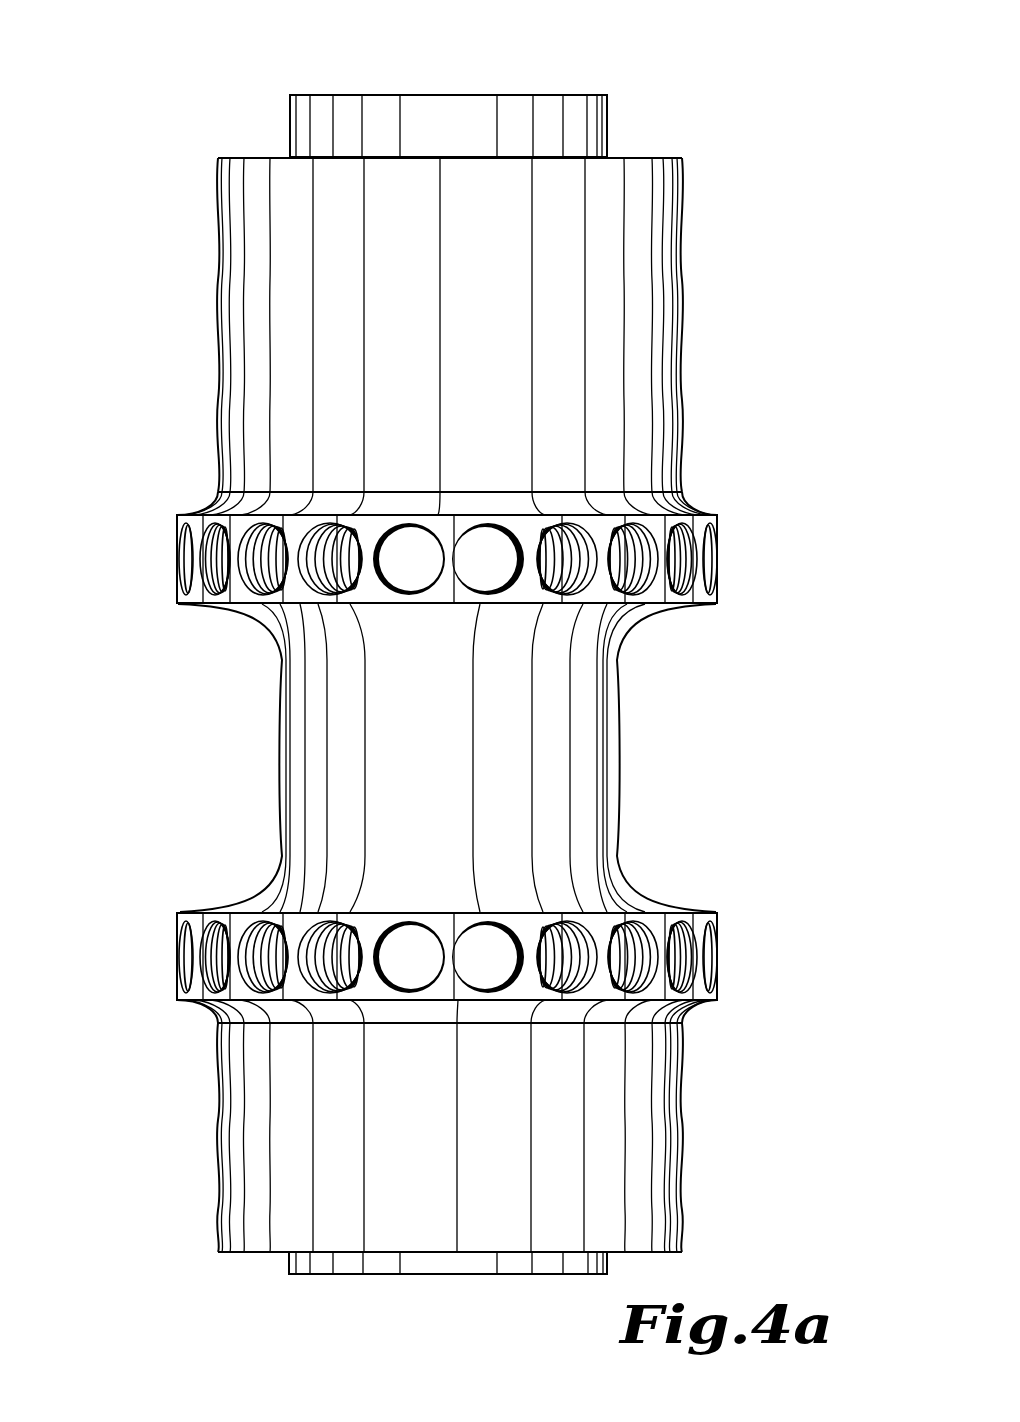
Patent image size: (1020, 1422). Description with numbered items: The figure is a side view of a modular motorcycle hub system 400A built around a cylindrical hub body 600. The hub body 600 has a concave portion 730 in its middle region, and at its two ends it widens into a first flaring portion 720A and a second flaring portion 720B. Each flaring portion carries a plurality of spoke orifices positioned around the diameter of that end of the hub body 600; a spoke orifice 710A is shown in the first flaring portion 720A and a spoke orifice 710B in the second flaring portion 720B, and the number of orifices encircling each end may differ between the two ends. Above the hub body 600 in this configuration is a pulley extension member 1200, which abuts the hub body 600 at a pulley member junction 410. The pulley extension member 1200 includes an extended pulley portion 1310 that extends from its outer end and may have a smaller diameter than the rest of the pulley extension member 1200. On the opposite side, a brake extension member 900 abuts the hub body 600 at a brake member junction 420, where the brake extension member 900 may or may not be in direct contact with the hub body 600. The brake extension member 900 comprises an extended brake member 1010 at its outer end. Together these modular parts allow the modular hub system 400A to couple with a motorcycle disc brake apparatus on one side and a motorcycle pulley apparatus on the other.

The modular hub system 400A is at (710, 90).
The pulley extension member 1200 is at (368, 273).
The extended pulley portion 1310 is at (290, 122).
The hub body 600 is at (137, 492).
The pulley member junction 410 is at (687, 492).
The first flaring portion 720A is at (728, 496).
The spoke orifice 710A is at (411, 596).
The concave portion 730 is at (728, 613).
The second flaring portion 720B is at (728, 913).
The spoke orifice 710B is at (409, 920).
The brake member junction 420 is at (683, 1024).
The brake extension member 900 is at (137, 1022).
The extended brake member 1010 is at (289, 1260).